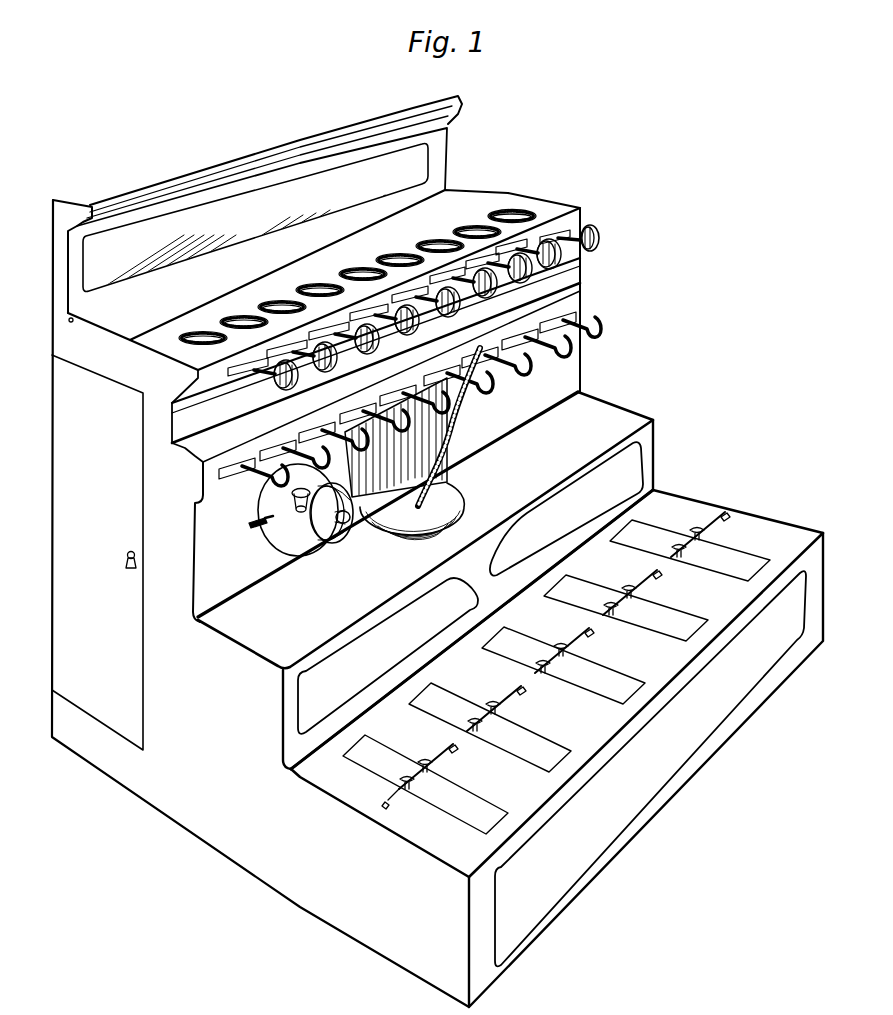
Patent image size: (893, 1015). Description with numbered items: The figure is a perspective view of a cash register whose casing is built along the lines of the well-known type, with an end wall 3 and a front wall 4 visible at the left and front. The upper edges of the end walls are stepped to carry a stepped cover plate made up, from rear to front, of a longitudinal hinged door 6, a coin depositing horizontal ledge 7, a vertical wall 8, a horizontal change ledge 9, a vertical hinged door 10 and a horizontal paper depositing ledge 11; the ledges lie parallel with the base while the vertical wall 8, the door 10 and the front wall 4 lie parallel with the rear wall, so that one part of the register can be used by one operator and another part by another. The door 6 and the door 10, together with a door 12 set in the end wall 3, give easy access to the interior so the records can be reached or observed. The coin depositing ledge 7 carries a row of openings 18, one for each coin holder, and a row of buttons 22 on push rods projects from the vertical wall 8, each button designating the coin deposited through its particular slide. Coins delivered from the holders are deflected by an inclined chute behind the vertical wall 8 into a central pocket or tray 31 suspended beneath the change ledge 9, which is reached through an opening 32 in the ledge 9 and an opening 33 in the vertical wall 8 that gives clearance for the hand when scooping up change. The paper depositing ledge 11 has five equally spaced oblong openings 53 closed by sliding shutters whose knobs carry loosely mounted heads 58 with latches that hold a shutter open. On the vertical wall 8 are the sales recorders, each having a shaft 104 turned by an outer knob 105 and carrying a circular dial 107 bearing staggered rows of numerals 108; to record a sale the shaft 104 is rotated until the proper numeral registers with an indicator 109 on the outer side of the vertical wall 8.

The end wall 3 is at (260, 603).
The front wall 4 is at (648, 815).
The longitudinal hinged door 6 is at (472, 195).
The coin depositing horizontal ledge 7 is at (542, 212).
The vertical wall 8 is at (560, 358).
The horizontal change ledge 9 is at (425, 530).
The vertical hinged door 10 is at (643, 438).
The horizontal paper depositing ledge 11 is at (680, 507).
The door 12 is at (97, 552).
The opening 18 is at (520, 213).
The button 22 is at (600, 227).
The pocket or tray 31 is at (413, 513).
The opening 32 is at (452, 488).
The opening 33 is at (441, 428).
The oblong opening 53 is at (730, 552).
The head 58 is at (692, 530).
The shaft 104 is at (301, 514).
The knob 105 is at (333, 543).
The circular dial 107 is at (293, 545).
The numerals 108 is at (272, 537).
The indicator 109 is at (250, 527).